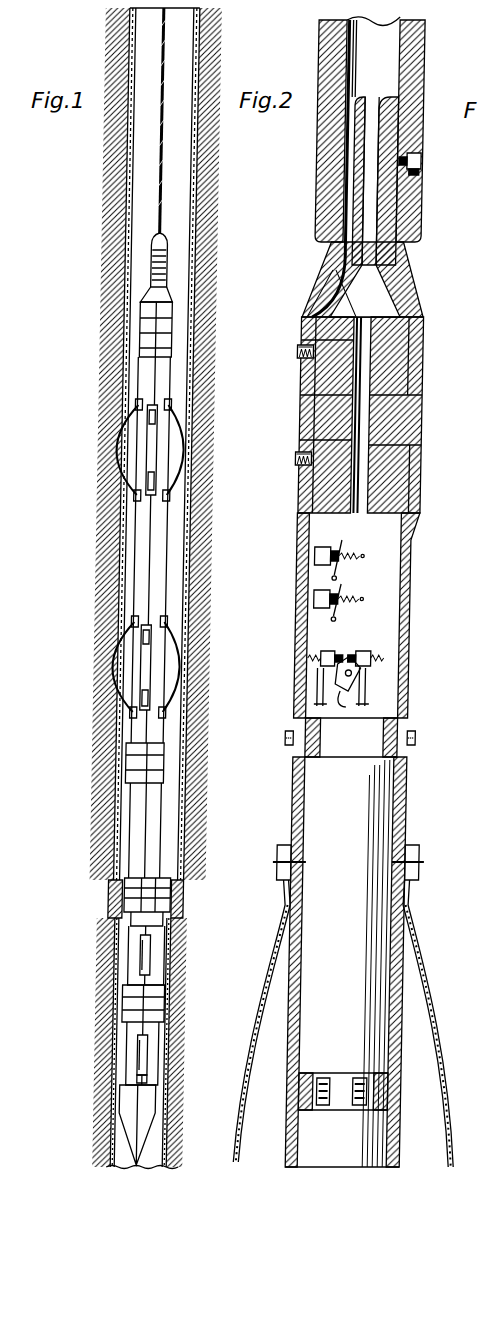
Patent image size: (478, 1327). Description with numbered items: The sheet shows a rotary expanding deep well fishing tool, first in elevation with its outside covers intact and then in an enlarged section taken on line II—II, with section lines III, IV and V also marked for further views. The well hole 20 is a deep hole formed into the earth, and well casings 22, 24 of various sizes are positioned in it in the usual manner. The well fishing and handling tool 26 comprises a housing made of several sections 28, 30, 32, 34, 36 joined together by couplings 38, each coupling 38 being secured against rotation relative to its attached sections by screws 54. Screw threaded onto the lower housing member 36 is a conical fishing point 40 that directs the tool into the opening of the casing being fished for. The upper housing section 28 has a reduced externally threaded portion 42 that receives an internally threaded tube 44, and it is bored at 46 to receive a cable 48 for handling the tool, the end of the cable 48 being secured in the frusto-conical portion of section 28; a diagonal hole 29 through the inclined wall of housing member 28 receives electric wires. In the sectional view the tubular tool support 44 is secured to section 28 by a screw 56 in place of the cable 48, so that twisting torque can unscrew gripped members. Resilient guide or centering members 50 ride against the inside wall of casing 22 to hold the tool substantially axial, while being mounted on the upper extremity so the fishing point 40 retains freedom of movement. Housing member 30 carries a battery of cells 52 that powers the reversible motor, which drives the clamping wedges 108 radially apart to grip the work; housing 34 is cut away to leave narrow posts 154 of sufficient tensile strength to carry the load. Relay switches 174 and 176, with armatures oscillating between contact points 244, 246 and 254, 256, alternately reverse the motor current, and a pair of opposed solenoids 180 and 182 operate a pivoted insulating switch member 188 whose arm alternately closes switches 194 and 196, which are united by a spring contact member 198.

In FIG. 1, the well hole 20 is at (126, 886).
In FIG. 1, the well casing 22 is at (126, 151).
In FIG. 1, the well casing 24 is at (129, 1140).
In FIG. 1, the well fishing and handling tool 26 is at (149, 605).
In FIG. 1, the upper housing section 28 is at (150, 293).
In FIG. 2, the upper housing section 28 is at (406, 279).
In FIG. 2, the diagonal hole 29 is at (326, 291).
In FIG. 1, the housing section 30 is at (148, 383).
In FIG. 2, the housing section 30 is at (414, 601).
In FIG. 1, the housing section 32 is at (148, 830).
In FIG. 1, the housing section 34 is at (143, 926).
In FIG. 1, the lower housing member 36 is at (146, 1023).
In FIG. 1, the coupling 38 is at (142, 331).
In FIG. 2, the coupling 38 is at (309, 427).
In FIG. 1, the conical fishing point 40 is at (162, 1112).
In FIG. 1, the reduced externally threaded portion 42 is at (168, 273).
In FIG. 2, the reduced externally threaded portion 42 is at (393, 198).
In FIG. 2, the internally threaded tube 44 is at (404, 96).
In FIG. 2, the bore 46 is at (374, 221).
In FIG. 1, the cable 48 is at (166, 170).
In FIG. 2, the cable 48 is at (334, 168).
In FIG. 1, the resilient guide or centering member 50 is at (178, 477).
In FIG. 2, the resilient guide or centering member 50 is at (276, 976).
In FIG. 2, the battery of cells 52 is at (318, 812).
In FIG. 2, the screw 54 is at (304, 352).
In FIG. 2, the screw 56 is at (427, 161).
In FIG. 1, the clamping wedge 108 is at (158, 951).
In FIG. 1, the post 154 is at (166, 1066).
In FIG. 2, the relay switch 174 is at (322, 568).
In FIG. 2, the relay switch 176 is at (312, 618).
In FIG. 2, the solenoid 180 is at (331, 651).
In FIG. 2, the solenoid 182 is at (385, 651).
In FIG. 2, the switch member 188 is at (353, 667).
In FIG. 2, the switch 194 is at (330, 695).
In FIG. 2, the switch 196 is at (380, 695).
In FIG. 2, the spring contact member 198 is at (360, 702).
In FIG. 2, the contact point 244 is at (343, 541).
In FIG. 2, the contact point 246 is at (361, 546).
In FIG. 2, the contact point 254 is at (336, 587).
In FIG. 2, the contact point 256 is at (362, 590).
In FIG. 1, the section line II— II is at (168, 232).
In FIG. 1, the section line III is at (148, 730).
In FIG. 1, the section line IV is at (172, 1168).
In FIG. 1, the section line V is at (172, 890).